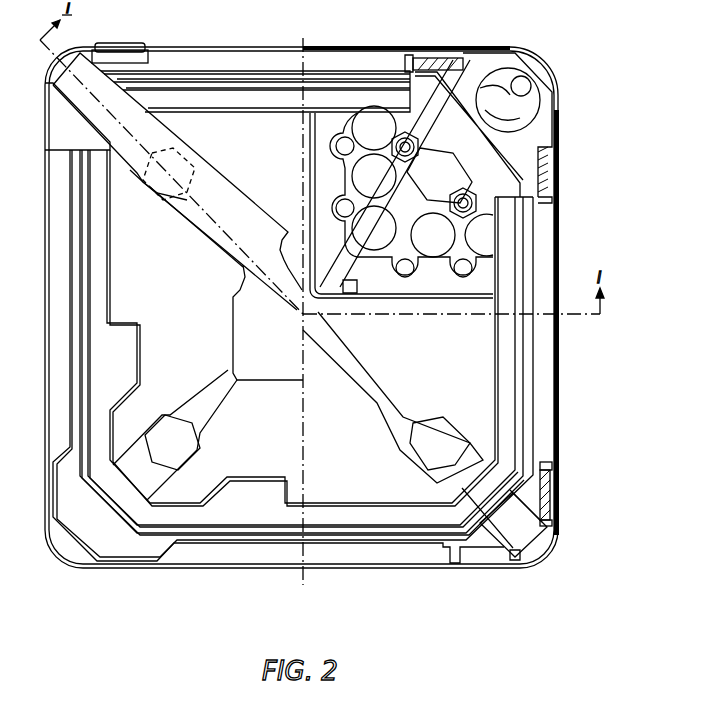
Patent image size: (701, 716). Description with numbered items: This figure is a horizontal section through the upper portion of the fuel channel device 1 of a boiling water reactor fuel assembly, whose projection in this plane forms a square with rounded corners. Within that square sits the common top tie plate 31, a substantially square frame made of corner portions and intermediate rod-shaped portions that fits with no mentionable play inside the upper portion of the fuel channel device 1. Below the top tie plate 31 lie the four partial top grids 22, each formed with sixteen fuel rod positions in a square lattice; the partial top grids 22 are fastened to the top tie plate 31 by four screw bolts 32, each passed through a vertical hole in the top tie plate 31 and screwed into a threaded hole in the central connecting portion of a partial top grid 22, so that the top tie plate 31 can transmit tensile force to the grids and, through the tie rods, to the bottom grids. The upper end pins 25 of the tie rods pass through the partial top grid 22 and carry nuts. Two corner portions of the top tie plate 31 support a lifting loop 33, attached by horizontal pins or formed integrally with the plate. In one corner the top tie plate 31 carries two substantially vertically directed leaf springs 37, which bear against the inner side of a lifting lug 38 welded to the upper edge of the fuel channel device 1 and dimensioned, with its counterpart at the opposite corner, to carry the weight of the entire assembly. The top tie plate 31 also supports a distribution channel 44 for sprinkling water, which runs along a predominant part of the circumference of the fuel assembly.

The fuel channel device 1 is at (560, 340).
The partial top grid 22 is at (447, 277).
The upper end pin 25 is at (420, 137).
The top tie plate 31 is at (483, 540).
The screw bolt 32 is at (188, 447).
The lifting loop 33 is at (215, 177).
The leaf spring 37 is at (422, 63).
The lifting lug 38 is at (559, 252).
The distribution channel 44 is at (507, 377).